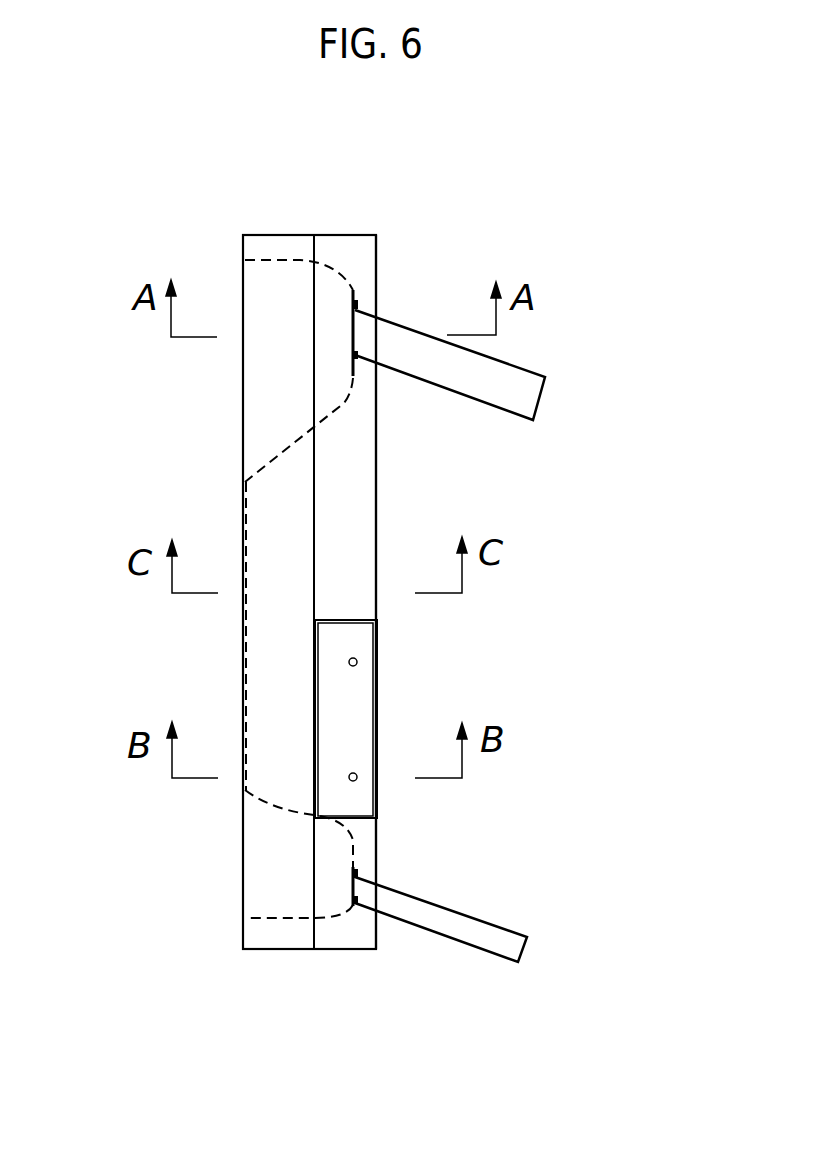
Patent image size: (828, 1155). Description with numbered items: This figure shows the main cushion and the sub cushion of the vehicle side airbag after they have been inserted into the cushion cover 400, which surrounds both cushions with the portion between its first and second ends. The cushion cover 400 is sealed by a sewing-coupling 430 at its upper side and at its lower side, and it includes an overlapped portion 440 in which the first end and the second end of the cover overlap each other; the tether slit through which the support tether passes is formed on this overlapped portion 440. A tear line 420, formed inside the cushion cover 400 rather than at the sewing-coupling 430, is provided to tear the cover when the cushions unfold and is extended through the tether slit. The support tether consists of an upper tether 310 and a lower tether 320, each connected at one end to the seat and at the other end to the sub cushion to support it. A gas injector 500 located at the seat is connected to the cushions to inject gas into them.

The upper tether 310 is at (527, 385).
The lower tether 320 is at (493, 923).
The cushion cover 400 is at (262, 396).
The tear line 420 is at (343, 403).
The sewing-coupling 430 is at (265, 242).
The overlapped portion 440 is at (367, 500).
The gas injector 500 is at (363, 680).